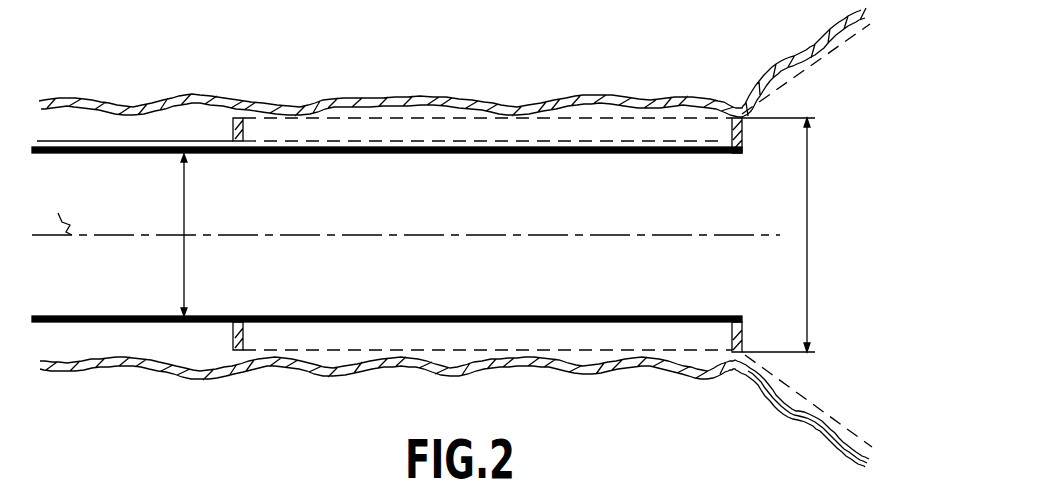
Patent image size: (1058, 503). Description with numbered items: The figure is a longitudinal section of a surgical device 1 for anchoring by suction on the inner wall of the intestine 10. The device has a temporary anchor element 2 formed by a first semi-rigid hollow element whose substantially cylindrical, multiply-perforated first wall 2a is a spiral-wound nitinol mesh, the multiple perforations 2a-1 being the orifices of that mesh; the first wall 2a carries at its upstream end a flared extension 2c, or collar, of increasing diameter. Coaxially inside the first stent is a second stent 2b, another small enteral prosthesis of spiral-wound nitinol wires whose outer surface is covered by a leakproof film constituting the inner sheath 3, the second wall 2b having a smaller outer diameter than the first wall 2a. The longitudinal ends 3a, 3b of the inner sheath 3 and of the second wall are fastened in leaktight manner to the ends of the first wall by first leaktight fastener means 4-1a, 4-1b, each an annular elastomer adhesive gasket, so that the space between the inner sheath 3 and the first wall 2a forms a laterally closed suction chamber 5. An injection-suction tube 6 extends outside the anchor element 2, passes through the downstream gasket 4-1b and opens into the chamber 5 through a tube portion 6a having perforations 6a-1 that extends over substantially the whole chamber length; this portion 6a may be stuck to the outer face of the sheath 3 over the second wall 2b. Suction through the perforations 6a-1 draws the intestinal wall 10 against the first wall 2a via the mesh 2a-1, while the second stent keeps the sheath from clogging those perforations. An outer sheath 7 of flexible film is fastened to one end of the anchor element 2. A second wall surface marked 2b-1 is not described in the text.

The surgical device 1 is at (843, 303).
The anchor element 2 is at (792, 92).
The first wall 2a is at (684, 99).
The multiple perforations 2a-1 is at (328, 353).
The second stent 2b is at (413, 155).
The inner surface of reinforcing layer 2b-1 is at (283, 154).
The flared extension 2c is at (833, 420).
The inner sheath 3 is at (523, 323).
The upstream end of inner sheath 3a is at (730, 352).
The downstream end of inner sheath 3b is at (238, 316).
The first leaktight fastener means 4-1a is at (742, 338).
The first leaktight fastener means 4-1b is at (232, 350).
The suction chamber 5 is at (677, 128).
The injection-suction tube 6 is at (136, 141).
The tube portion 6a is at (592, 141).
The perforations 6a-1 is at (547, 141).
The outer sheath 7 is at (106, 316).
The intestine 10 is at (421, 367).